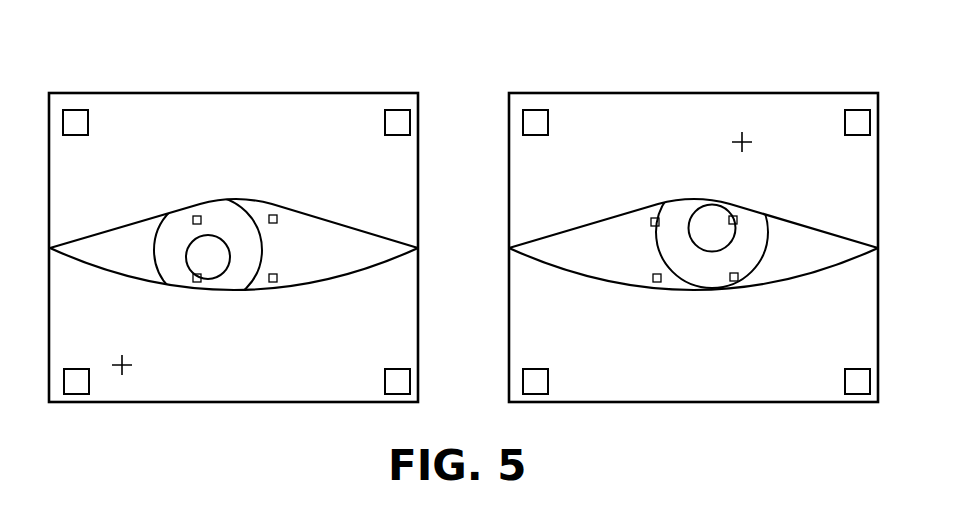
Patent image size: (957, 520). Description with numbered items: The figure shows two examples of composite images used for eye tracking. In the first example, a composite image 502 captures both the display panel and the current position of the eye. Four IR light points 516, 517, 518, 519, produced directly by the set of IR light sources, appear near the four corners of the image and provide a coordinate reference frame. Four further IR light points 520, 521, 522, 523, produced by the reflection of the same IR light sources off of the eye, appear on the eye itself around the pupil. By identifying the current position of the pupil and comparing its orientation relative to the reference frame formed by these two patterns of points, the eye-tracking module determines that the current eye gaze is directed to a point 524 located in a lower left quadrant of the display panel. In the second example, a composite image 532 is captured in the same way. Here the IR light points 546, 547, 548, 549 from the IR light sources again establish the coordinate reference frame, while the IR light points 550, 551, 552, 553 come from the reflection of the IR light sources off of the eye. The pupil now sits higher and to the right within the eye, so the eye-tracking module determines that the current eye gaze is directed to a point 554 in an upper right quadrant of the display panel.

The composite image 502 is at (247, 88).
The IR light point 516 is at (88, 127).
The IR light point 517 is at (385, 127).
The IR light point 518 is at (385, 385).
The IR light point 519 is at (77, 394).
The IR light point 520 is at (197, 216).
The IR light point 521 is at (274, 215).
The IR light point 522 is at (274, 282).
The IR light point 523 is at (197, 282).
The point 524 is at (128, 356).
The composite image 532 is at (692, 88).
The IR light point 546 is at (548, 127).
The IR light point 547 is at (845, 127).
The IR light point 548 is at (845, 385).
The IR light point 549 is at (548, 385).
The IR light point 550 is at (655, 218).
The IR light point 551 is at (734, 216).
The IR light point 552 is at (735, 281).
The IR light point 553 is at (657, 282).
The point 554 is at (748, 152).